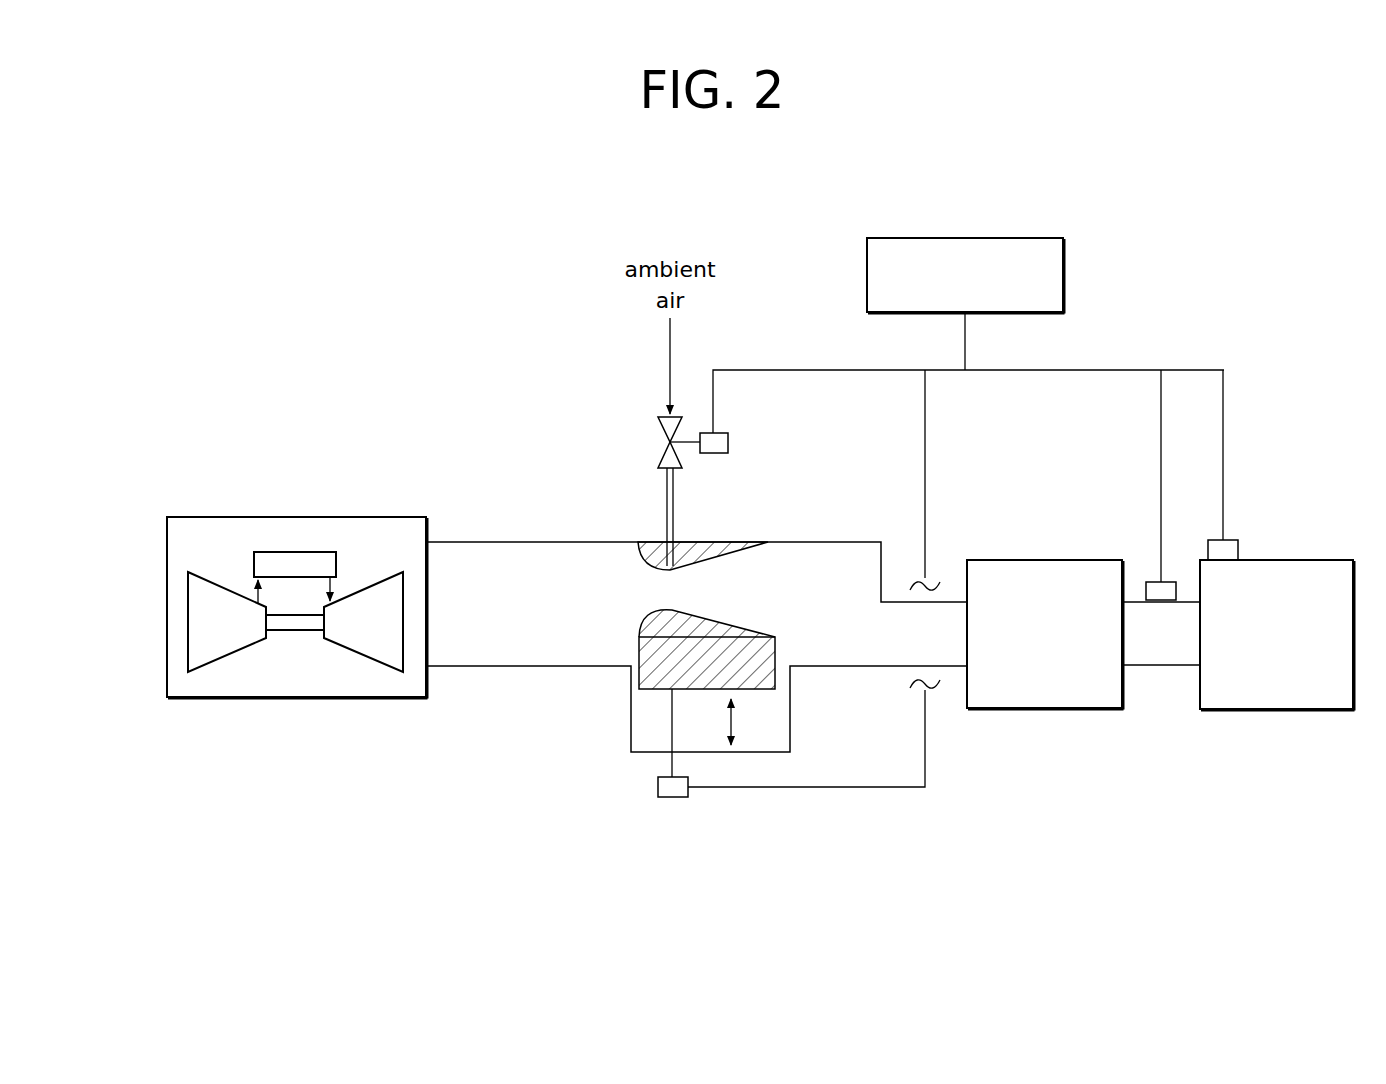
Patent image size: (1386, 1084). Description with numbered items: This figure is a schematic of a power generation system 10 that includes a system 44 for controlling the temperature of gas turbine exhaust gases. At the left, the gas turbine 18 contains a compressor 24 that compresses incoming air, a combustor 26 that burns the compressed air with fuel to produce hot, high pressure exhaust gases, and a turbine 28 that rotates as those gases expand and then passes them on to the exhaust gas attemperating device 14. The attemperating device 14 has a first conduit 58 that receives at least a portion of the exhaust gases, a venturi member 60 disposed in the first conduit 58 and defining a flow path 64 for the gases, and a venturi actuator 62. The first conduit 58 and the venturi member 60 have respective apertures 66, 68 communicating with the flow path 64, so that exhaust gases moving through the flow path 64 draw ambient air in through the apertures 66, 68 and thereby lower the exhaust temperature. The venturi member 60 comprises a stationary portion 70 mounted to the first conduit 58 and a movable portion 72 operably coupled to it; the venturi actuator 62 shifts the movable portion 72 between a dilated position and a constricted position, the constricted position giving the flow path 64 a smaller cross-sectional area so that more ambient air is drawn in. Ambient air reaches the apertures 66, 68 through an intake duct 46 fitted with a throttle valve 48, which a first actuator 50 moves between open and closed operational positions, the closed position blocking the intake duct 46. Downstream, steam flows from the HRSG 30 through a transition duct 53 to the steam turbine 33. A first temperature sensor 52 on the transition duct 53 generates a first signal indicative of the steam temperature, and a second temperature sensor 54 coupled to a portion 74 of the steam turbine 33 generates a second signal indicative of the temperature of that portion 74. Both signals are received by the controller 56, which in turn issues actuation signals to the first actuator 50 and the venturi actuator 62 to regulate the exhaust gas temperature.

The power generation system 10 is at (174, 716).
The exhaust gas attemperating device 14 is at (536, 397).
The gas turbine 18 is at (175, 517).
The compressor 24 is at (188, 597).
The combustor 26 is at (275, 552).
The turbine 28 is at (393, 572).
The HRSG 30 is at (992, 560).
The steam turbine 33 is at (1322, 558).
The system for controlling a temperature of the exhaust gases 44 is at (1115, 294).
The intake duct 46 is at (665, 478).
The throttle valve 48 is at (658, 430).
The first actuator 50 is at (730, 446).
The first temperature sensor 52 is at (1150, 582).
The transition duct 53 is at (1160, 668).
The second temperature sensor 54 is at (1237, 540).
The controller 56 is at (883, 238).
The first conduit 58 is at (546, 668).
The venturi member 60 is at (739, 559).
The venturi actuator 62 is at (662, 797).
The flow path 64 is at (686, 604).
The aperture 66 is at (668, 545).
The aperture 68 is at (663, 564).
The stationary portion 70 is at (640, 549).
The movable portion 72 is at (639, 640).
The portion of the steam turbine 74 is at (1198, 575).